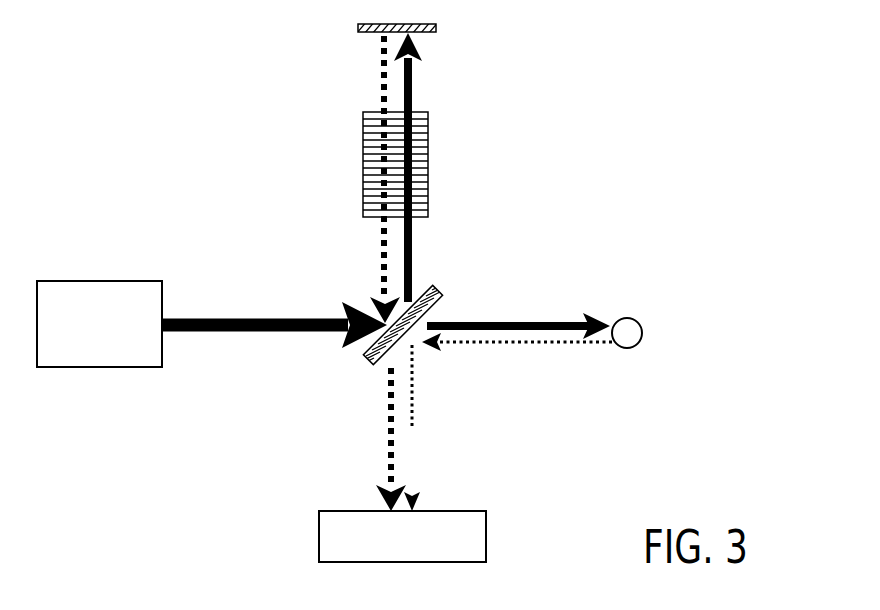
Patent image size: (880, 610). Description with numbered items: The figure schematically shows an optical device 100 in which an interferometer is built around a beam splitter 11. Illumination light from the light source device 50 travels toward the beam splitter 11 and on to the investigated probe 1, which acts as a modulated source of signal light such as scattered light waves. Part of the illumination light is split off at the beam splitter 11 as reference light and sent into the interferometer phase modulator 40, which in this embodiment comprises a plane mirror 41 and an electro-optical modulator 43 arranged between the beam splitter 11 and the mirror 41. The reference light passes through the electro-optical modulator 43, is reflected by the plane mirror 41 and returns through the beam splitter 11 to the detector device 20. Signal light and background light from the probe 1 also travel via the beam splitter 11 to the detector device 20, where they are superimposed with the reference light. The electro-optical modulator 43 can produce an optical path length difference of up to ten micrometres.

The optical device 100 is at (207, 197).
The light source device 50 is at (120, 352).
The interferometer phase modulator 40 is at (337, 107).
The plane mirror 41 is at (436, 30).
The electro-optical modulator 43 is at (430, 165).
The beam splitter 11 is at (367, 363).
The detector device 20 is at (454, 551).
The probe 1 is at (637, 347).